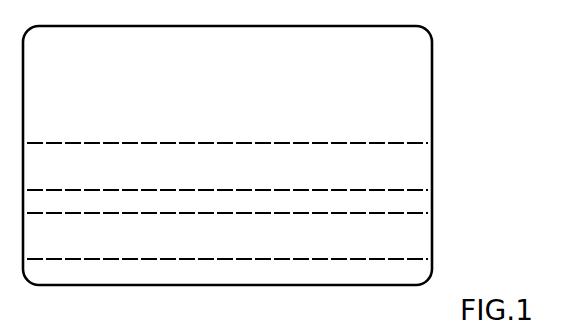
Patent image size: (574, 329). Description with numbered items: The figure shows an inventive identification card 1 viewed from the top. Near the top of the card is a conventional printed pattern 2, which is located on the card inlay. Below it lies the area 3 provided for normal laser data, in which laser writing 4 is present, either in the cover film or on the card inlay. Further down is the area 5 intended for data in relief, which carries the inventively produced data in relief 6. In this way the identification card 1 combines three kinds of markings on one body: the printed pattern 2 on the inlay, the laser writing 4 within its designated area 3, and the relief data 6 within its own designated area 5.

The identification card 1 is at (442, 80).
The conventional printed pattern 2 is at (128, 68).
The area provided for normal laser data 3 is at (418, 172).
The laser writing 4 is at (128, 165).
The area intended for data in relief 5 is at (420, 245).
The data in relief 6 is at (120, 238).